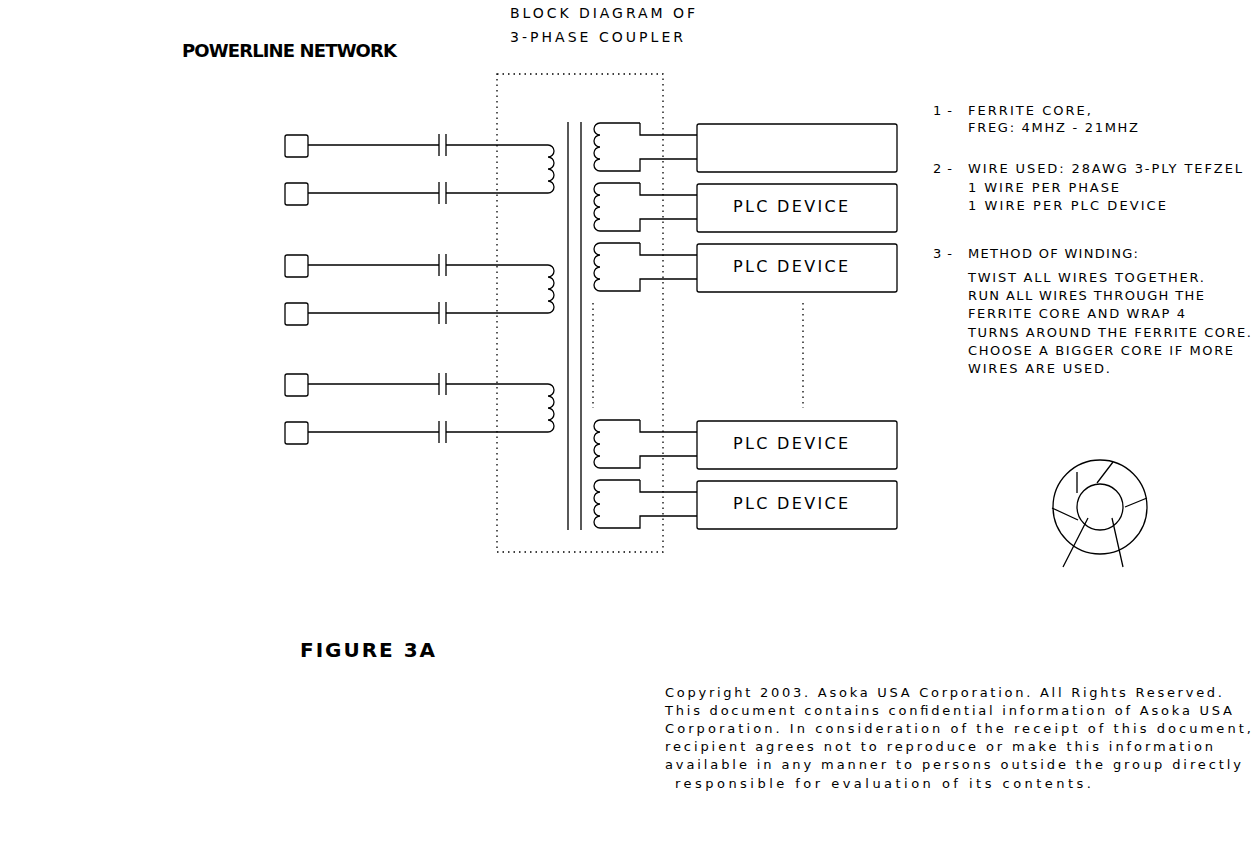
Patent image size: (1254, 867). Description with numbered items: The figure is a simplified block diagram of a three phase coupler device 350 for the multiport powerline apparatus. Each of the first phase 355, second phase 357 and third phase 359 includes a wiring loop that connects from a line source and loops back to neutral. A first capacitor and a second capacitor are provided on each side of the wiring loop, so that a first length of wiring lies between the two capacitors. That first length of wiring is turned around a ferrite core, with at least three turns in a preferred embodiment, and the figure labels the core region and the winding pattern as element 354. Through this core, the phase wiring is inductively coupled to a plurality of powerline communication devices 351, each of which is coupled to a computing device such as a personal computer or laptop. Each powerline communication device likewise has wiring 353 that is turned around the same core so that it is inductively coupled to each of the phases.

The three phase coupler device 350 is at (673, 88).
The powerline communication devices 351 is at (780, 122).
The wiring 353 is at (650, 292).
The ferrite core 354 is at (603, 372).
The phase 1 355 is at (250, 178).
The phase 2 357 is at (250, 312).
The phase 3 359 is at (250, 420).